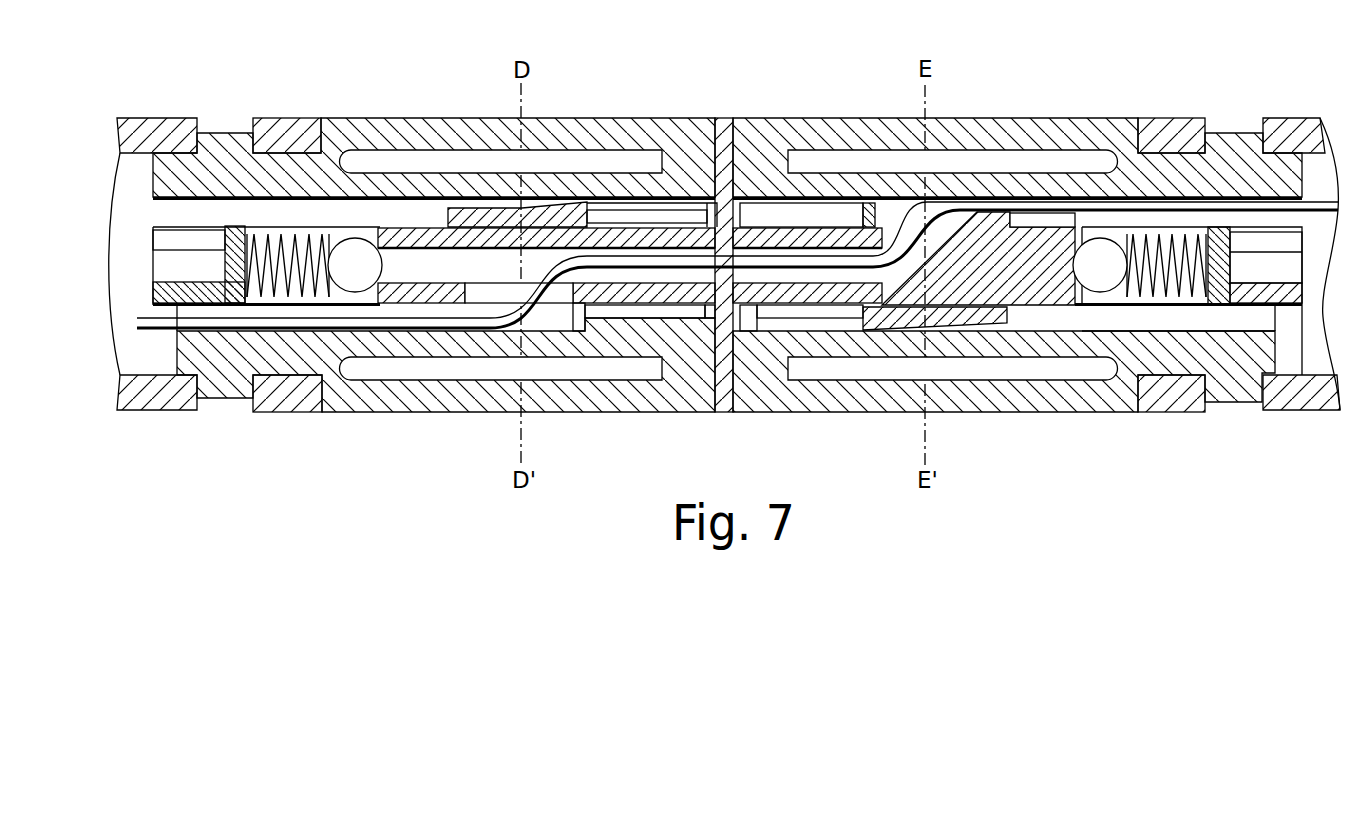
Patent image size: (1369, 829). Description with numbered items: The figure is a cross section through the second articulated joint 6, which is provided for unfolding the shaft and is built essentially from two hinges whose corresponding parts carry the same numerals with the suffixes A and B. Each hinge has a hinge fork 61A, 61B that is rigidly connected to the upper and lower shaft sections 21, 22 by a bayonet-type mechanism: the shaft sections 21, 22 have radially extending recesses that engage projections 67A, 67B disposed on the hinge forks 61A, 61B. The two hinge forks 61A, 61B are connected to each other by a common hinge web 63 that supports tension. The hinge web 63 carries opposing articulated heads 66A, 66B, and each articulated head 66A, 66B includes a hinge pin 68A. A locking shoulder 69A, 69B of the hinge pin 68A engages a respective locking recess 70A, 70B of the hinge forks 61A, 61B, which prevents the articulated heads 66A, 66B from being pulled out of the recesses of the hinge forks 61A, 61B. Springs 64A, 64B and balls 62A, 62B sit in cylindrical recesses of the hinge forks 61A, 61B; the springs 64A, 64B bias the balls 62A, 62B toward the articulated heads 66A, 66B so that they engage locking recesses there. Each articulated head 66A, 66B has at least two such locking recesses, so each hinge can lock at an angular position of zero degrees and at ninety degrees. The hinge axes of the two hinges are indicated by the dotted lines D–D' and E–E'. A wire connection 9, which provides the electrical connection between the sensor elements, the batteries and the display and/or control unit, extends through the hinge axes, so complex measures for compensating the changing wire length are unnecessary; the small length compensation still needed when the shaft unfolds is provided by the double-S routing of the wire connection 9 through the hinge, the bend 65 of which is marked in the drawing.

The second articulated joint 6 is at (303, 40).
The wire connection 9 is at (1277, 211).
The upper shaft section 21 is at (1290, 127).
The lower shaft section 22 is at (157, 120).
The hinge fork 61A is at (462, 123).
The hinge fork 61B is at (1087, 122).
The ball 62A is at (347, 240).
The ball 62B is at (1098, 290).
The hinge web 63 is at (722, 118).
The spring 64A is at (270, 233).
The spring 64B is at (1177, 300).
The wire bend 65 is at (763, 285).
The articulated head 66A is at (413, 226).
The articulated head 66B is at (1020, 287).
The projection 67A is at (230, 143).
The projection 67B is at (1235, 143).
The hinge pin 68A is at (462, 212).
The locking shoulder 69A is at (583, 331).
The locking shoulder 69B is at (873, 331).
The locking recess 70A is at (596, 328).
The locking recess 70B is at (853, 327).